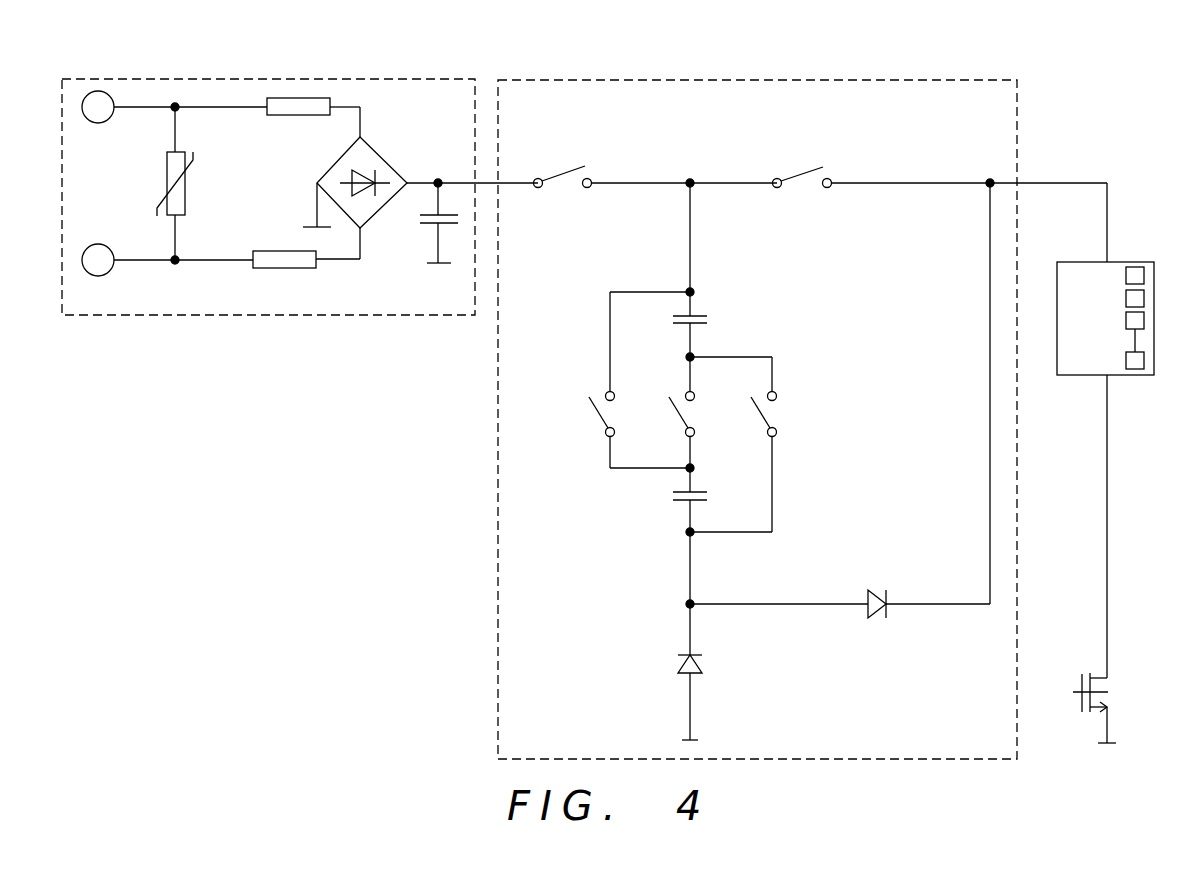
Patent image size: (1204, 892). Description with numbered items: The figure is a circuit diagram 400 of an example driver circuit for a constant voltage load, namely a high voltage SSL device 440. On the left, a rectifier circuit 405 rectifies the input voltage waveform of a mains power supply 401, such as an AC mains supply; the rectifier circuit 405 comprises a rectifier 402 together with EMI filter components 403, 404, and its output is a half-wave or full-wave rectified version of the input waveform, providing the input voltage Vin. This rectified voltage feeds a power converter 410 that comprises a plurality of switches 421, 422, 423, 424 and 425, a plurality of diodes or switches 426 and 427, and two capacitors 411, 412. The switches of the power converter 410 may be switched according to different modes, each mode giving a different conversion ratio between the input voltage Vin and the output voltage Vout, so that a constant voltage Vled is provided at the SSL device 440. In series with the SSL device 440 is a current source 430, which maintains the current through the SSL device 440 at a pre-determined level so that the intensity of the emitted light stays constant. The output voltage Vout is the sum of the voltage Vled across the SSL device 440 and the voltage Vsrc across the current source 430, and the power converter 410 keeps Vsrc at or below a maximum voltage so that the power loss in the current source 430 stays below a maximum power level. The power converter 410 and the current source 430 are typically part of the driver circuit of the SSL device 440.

The circuit diagram 400 is at (250, 58).
The mains power supply 401 is at (163, 183).
The rectifier 402 is at (372, 158).
The EMI filter component 403 is at (290, 116).
The EMI filter component 404 is at (416, 222).
The rectifier circuit 405 is at (285, 317).
The power converter 410 is at (1017, 122).
The capacitor C1 411 is at (704, 310).
The capacitor C2 412 is at (674, 512).
The switch S1 421 is at (558, 166).
The switch S2 422 is at (798, 166).
The switch Sa 423 is at (592, 422).
The switch Sb 424 is at (680, 392).
The switch Sc 425 is at (782, 410).
The diode S4 426 is at (676, 666).
The diode S3 427 is at (878, 586).
The current source 430 is at (1072, 708).
The SSL device 440 is at (1132, 262).